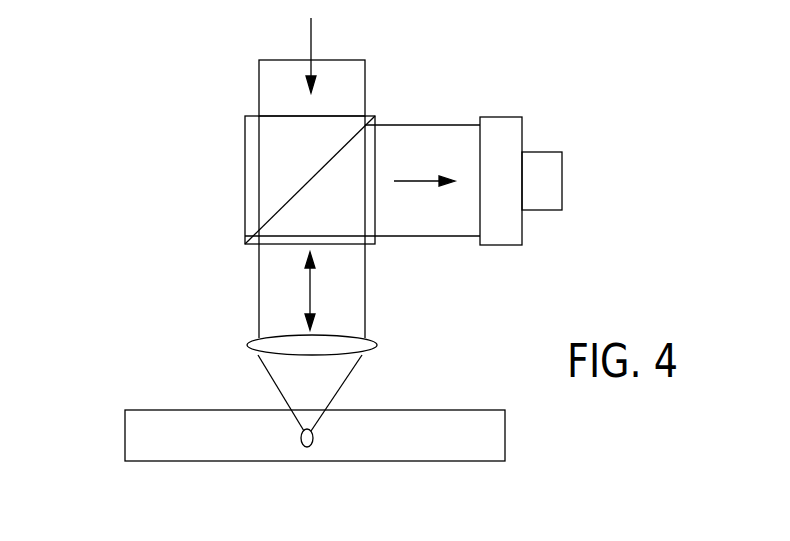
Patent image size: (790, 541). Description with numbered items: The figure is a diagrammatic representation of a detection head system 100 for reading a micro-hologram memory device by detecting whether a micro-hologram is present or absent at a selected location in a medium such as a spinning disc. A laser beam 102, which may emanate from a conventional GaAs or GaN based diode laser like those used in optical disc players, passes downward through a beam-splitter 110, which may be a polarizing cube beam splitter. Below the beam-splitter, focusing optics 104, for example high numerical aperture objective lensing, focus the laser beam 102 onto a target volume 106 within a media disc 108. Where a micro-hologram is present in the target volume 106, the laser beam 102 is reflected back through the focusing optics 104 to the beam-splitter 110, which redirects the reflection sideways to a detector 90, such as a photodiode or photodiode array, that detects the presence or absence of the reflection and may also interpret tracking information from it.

The system 100 is at (510, 33).
The laser beam 102 is at (258, 82).
The beam-splitter 110 is at (245, 178).
The detector 90 is at (562, 180).
The focusing optics 104 is at (250, 345).
The media disc 108 is at (125, 433).
The target volume 106 is at (322, 441).